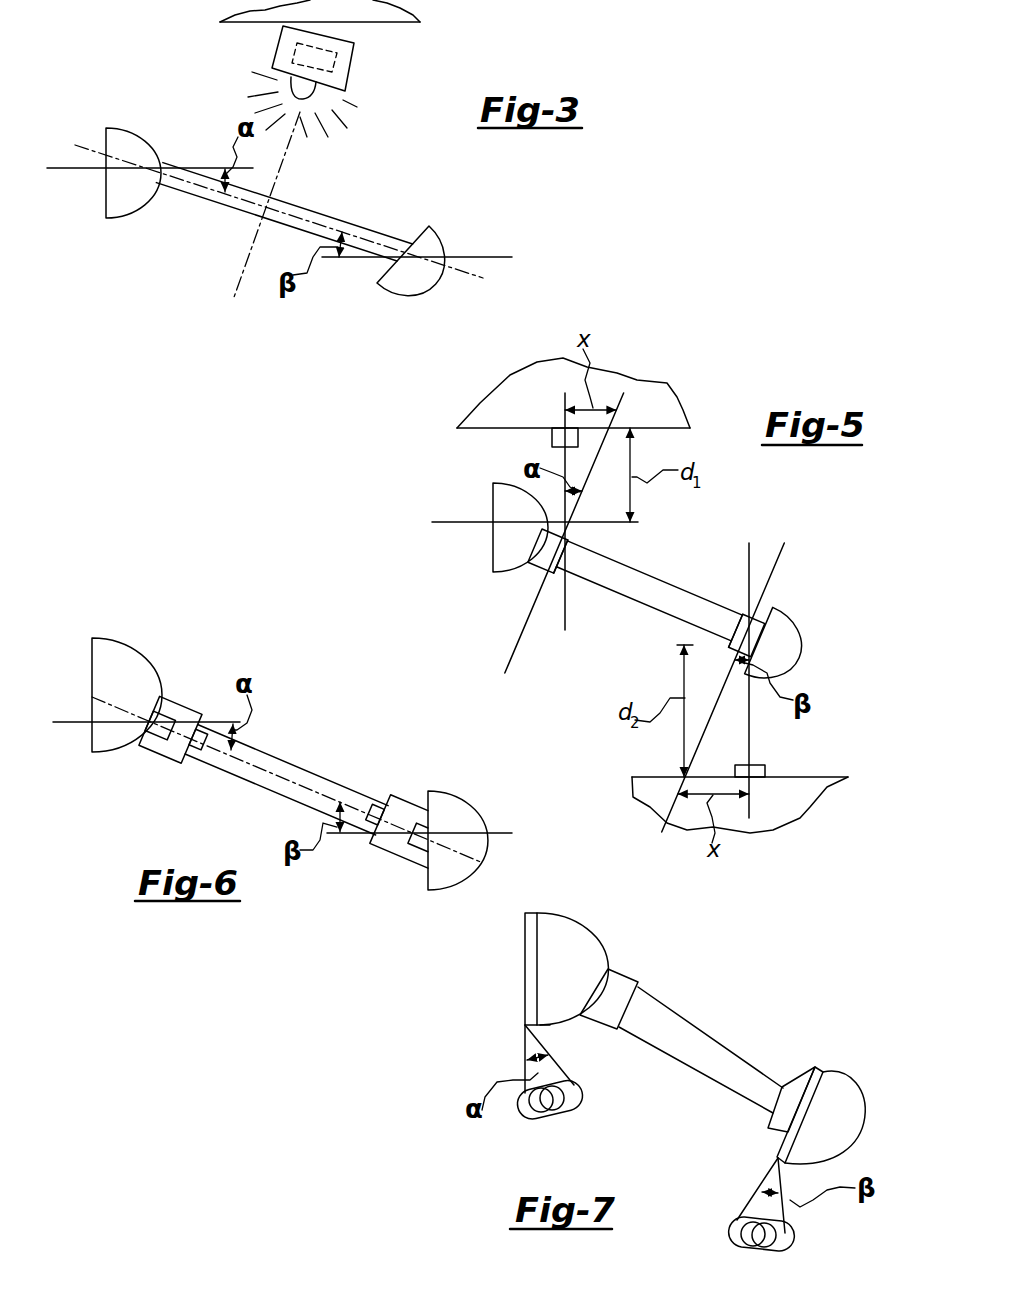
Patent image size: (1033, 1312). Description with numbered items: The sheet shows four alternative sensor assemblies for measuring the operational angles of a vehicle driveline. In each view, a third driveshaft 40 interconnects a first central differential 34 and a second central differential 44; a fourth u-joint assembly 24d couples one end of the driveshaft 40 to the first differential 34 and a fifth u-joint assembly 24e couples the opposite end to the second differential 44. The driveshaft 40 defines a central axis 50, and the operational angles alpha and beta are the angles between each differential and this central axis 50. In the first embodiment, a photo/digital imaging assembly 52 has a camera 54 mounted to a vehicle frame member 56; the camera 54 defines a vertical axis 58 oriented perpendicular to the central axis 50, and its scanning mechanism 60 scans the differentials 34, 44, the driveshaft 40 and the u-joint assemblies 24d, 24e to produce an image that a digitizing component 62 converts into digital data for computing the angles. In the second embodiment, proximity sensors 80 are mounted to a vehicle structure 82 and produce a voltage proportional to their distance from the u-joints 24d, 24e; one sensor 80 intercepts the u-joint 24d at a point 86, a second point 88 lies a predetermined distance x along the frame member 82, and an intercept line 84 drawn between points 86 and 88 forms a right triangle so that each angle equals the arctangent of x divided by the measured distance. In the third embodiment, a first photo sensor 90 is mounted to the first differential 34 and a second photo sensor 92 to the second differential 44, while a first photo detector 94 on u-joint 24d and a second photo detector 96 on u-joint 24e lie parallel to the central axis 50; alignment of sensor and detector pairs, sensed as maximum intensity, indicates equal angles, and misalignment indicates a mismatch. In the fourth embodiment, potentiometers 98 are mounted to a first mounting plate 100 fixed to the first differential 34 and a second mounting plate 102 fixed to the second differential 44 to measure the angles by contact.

In FIG. 5, the fourth u-joint assembly 24d is at (529, 582).
In FIG. 7, the fourth u-joint assembly 24d is at (630, 960).
In FIG. 5, the fifth u-joint assembly 24e is at (781, 607).
In FIG. 7, the fifth u-joint assembly 24e is at (788, 1070).
In FIG. 3, the first central differential 34 is at (150, 206).
In FIG. 5, the first central differential 34 is at (535, 542).
In FIG. 6, the first central differential 34 is at (146, 664).
In FIG. 7, the first central differential 34 is at (572, 950).
In FIG. 3, the third driveshaft 40 is at (284, 215).
In FIG. 5, the third driveshaft 40 is at (650, 596).
In FIG. 6, the third driveshaft 40 is at (286, 787).
In FIG. 7, the third driveshaft 40 is at (701, 1031).
In FIG. 3, the second central differential 44 is at (417, 289).
In FIG. 5, the second central differential 44 is at (799, 634).
In FIG. 6, the second central differential 44 is at (419, 806).
In FIG. 7, the second central differential 44 is at (835, 1098).
In FIG. 3, the central axis 50 is at (279, 211).
In FIG. 6, the central axis 50 is at (287, 780).
In FIG. 3, the photo/digital imaging assembly 52 is at (148, 82).
In FIG. 3, the camera 54 is at (352, 58).
In FIG. 3, the vehicle frame member 56 is at (349, 31).
In FIG. 3, the vertical axis 58 is at (229, 207).
In FIG. 3, the scanning mechanism 60 is at (326, 104).
In FIG. 3, the digitizing component 62 is at (253, 49).
In FIG. 5, the proximity sensor 80 is at (651, 602).
In FIG. 5, the vehicle structure 82 is at (674, 595).
In FIG. 5, the intercept line 84 is at (645, 578).
In FIG. 5, the intercept point 86 is at (652, 590).
In FIG. 5, the second point 88 is at (677, 579).
In FIG. 6, the first photo sensor 90 is at (151, 757).
In FIG. 6, the second photo sensor 92 is at (399, 859).
In FIG. 6, the first photo detector 94 is at (205, 680).
In FIG. 6, the second photo detector 96 is at (386, 775).
In FIG. 7, the potentiometer 98 is at (656, 1138).
In FIG. 7, the first mounting plate 100 is at (511, 969).
In FIG. 7, the second mounting plate 102 is at (806, 1077).